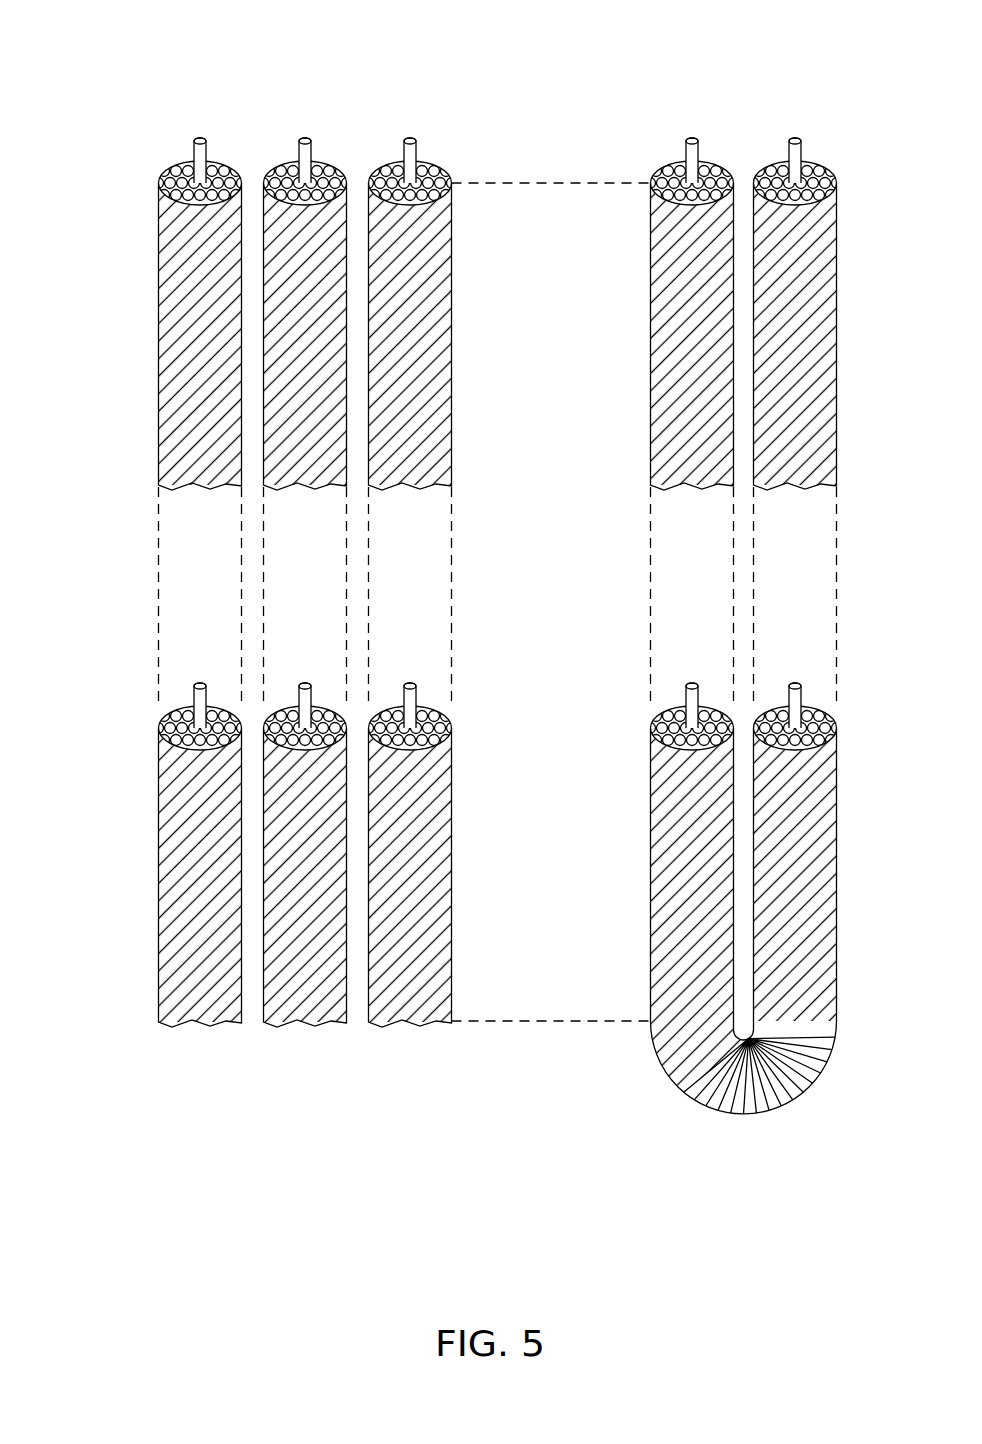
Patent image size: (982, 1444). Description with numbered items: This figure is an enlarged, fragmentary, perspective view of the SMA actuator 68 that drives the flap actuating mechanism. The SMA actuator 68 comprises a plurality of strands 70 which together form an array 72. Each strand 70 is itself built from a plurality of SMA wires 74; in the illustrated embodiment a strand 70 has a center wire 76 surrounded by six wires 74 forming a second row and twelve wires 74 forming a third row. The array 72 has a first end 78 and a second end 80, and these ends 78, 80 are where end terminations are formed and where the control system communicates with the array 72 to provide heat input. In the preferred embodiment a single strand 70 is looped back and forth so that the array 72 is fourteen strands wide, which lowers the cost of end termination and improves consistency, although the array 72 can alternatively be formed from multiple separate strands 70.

The SMA actuator 68 is at (628, 98).
The strand 70 is at (179, 146).
The array 72 is at (836, 1113).
The SMA wire 74 is at (165, 325).
The center wire 76 is at (300, 140).
The first end 78 is at (150, 215).
The second end 80 is at (126, 993).